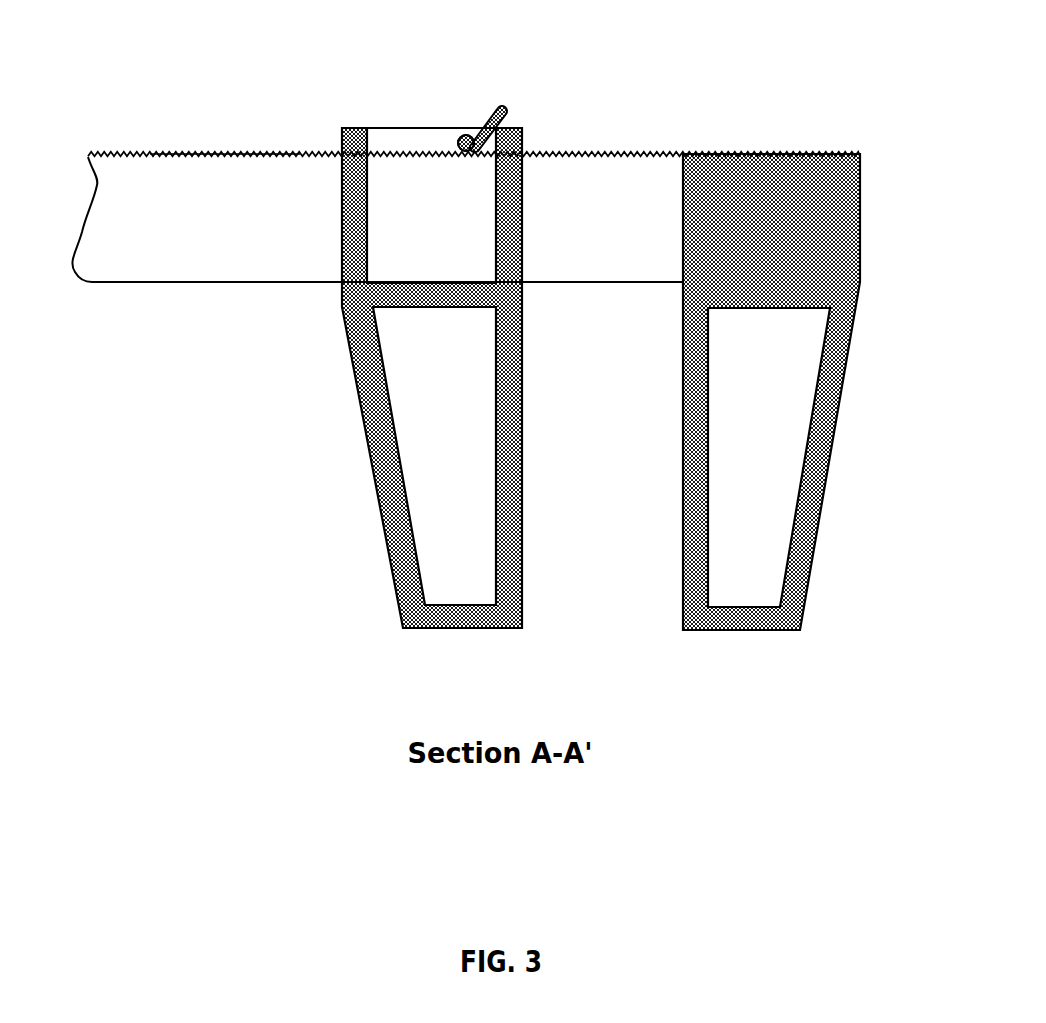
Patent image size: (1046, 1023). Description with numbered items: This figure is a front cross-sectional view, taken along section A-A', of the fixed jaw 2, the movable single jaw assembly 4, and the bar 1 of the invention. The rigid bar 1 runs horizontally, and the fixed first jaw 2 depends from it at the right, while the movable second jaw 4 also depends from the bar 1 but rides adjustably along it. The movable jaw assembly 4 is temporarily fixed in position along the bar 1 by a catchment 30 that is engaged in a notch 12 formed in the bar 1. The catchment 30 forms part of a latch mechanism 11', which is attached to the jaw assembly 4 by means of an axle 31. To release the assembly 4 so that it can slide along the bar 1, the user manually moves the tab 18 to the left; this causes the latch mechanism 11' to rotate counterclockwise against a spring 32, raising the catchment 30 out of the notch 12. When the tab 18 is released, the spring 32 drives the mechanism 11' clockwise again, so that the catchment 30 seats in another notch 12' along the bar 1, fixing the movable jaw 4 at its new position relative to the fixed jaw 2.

The rigid bar 1 is at (155, 210).
The notch 12' is at (225, 100).
The movable second jaw 4 is at (348, 307).
The notch 12 is at (546, 269).
The tab 18 is at (493, 125).
The axle 31 is at (468, 138).
The spring 32 is at (510, 127).
The catchment 30 is at (523, 137).
The latch mechanism 11' is at (536, 74).
The first jaw 2 is at (828, 458).